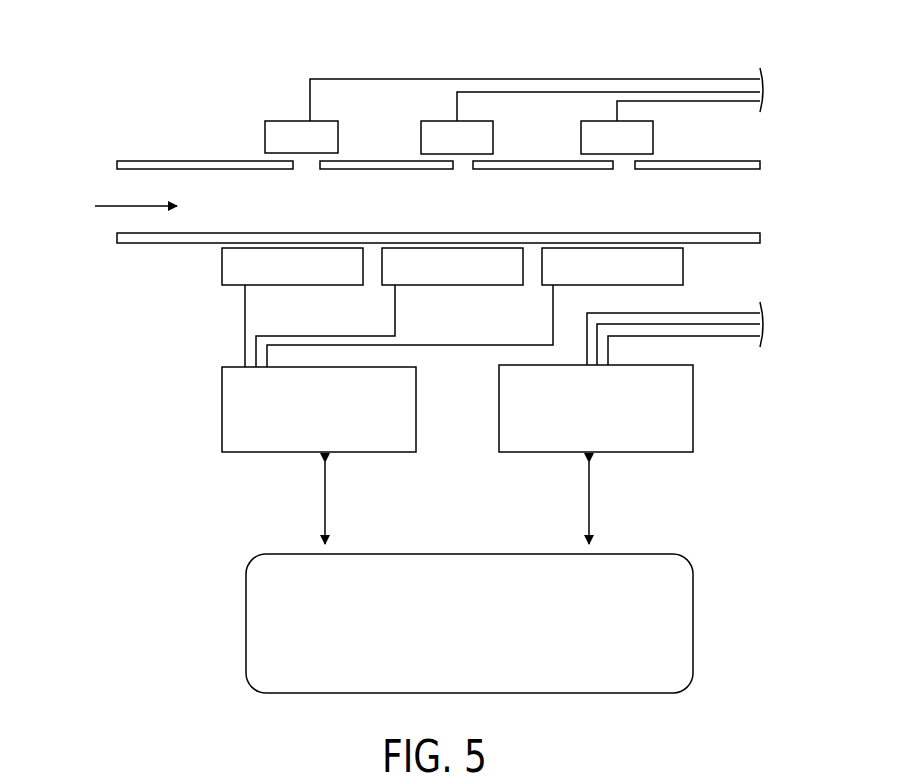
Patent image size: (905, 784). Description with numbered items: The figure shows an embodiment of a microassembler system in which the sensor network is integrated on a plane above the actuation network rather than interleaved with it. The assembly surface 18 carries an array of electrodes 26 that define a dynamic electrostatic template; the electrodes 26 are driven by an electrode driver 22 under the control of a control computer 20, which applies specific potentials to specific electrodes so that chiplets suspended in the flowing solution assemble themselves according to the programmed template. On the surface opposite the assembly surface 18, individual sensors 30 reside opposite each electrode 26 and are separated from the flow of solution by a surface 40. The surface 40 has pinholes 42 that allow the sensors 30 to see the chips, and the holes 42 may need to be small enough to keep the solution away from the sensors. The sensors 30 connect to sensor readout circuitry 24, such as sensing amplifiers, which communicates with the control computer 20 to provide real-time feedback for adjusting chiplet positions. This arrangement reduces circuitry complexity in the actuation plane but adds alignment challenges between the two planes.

The assembly surface 18 is at (117, 235).
The control computer 20 is at (694, 610).
The electrode driver 22 is at (382, 453).
The sensor readout circuitry 24 is at (659, 453).
The electrodes 26 is at (222, 268).
The sensors 30 is at (282, 120).
The surface 40 is at (118, 161).
The pinholes 42 is at (307, 165).